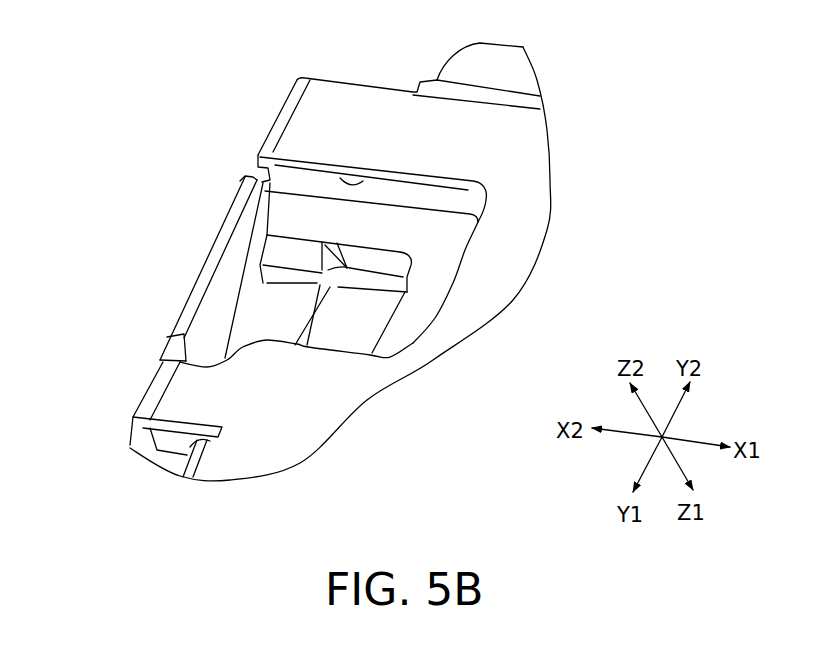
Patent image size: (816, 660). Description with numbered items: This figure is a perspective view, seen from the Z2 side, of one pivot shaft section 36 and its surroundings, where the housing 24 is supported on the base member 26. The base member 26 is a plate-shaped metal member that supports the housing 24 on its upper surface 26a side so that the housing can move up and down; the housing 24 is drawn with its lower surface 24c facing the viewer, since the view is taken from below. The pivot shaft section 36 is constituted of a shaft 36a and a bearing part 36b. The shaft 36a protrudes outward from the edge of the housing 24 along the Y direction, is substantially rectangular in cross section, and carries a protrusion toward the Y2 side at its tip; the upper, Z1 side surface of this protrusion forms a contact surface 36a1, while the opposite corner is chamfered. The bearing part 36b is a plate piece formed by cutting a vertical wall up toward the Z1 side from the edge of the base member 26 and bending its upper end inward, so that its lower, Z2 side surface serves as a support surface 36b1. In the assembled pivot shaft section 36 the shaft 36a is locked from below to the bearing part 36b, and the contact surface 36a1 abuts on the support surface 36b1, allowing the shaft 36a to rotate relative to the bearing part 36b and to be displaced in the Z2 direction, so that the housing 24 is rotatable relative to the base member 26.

The pivot shaft section 36 is at (104, 54).
The base member 26 is at (292, 434).
The upper surface 26a is at (358, 176).
The housing 24 is at (455, 205).
The lower surface 24c is at (445, 247).
The shaft 36a is at (292, 220).
The contact surface 36a1 is at (410, 293).
The bearing part 36b is at (270, 310).
The support surface 36b1 is at (270, 310).